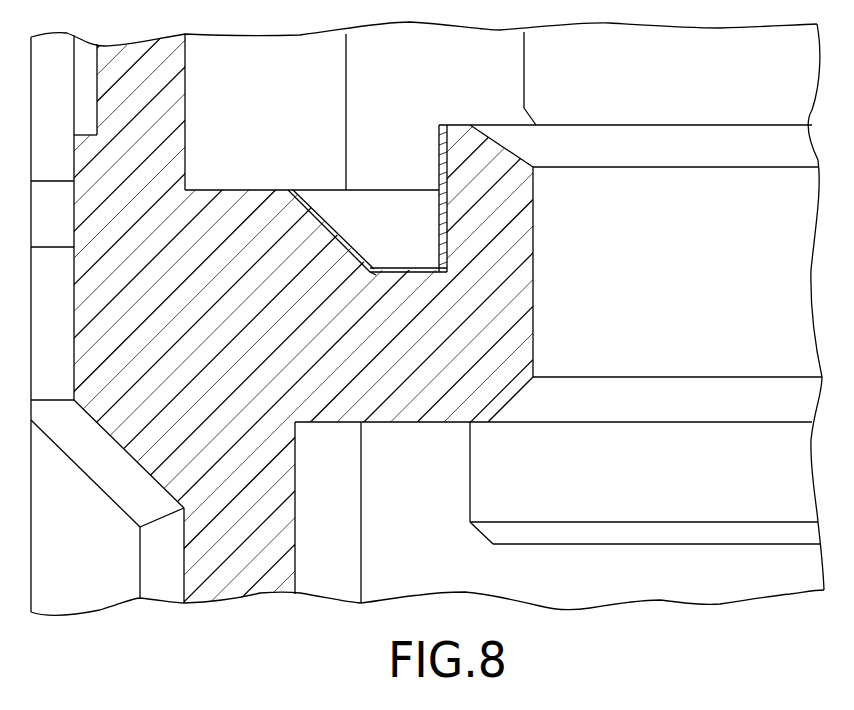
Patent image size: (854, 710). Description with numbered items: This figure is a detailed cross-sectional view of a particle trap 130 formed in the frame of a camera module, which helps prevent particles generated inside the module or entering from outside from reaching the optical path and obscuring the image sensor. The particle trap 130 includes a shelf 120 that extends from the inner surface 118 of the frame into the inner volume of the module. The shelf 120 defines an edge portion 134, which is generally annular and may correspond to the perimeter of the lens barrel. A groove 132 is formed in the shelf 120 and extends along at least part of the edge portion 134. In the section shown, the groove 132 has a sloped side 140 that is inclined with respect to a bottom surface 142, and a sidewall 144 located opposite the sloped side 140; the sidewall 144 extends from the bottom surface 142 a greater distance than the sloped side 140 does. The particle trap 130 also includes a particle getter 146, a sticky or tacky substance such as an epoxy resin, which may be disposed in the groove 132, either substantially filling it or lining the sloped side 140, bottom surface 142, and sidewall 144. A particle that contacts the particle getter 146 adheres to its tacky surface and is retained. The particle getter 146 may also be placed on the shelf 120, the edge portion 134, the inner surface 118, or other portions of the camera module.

The inner surface 118 is at (185, 145).
The shelf 120 is at (268, 190).
The particle trap 130 is at (412, 88).
The groove 132 is at (364, 165).
The edge portion 134 is at (533, 262).
The sloped side 140 is at (320, 213).
The bottom surface 142 is at (392, 272).
The sidewall 144 is at (438, 174).
The particle getter 146 is at (439, 242).